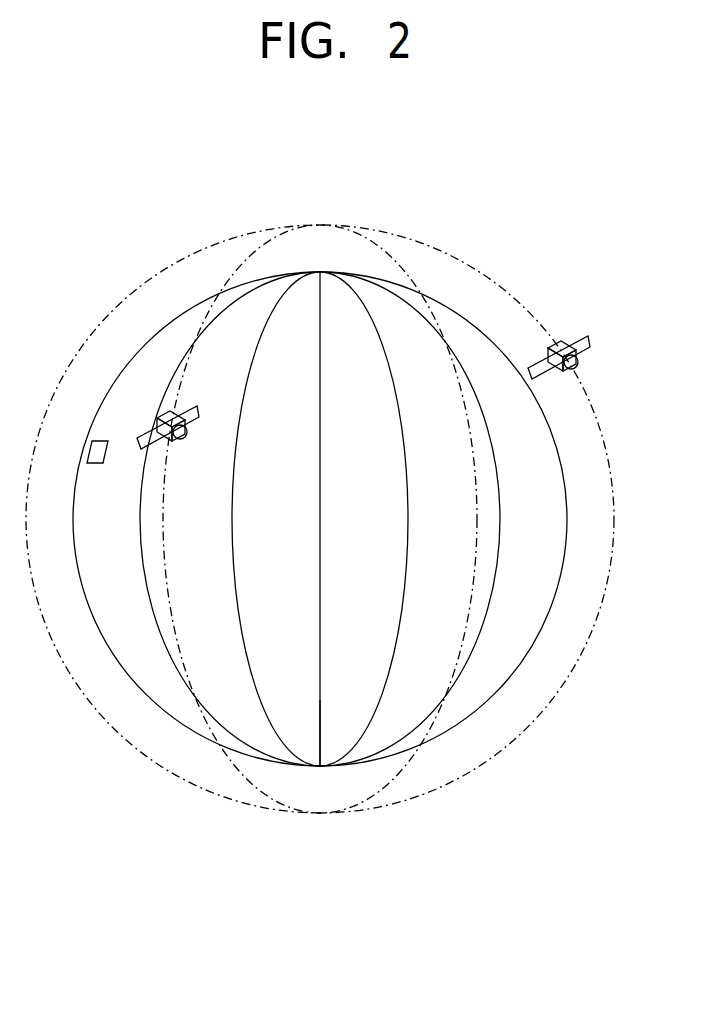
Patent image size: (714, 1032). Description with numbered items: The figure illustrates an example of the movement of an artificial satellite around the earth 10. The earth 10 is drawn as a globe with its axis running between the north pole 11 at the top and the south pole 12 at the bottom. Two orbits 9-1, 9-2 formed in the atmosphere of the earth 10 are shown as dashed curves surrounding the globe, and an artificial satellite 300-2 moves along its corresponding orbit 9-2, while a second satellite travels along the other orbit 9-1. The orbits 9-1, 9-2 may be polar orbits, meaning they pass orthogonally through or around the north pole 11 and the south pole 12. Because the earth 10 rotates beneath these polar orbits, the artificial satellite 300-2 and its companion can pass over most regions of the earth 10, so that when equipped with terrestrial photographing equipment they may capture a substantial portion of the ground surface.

The earth 10 is at (475, 712).
The north pole 11 is at (320, 271).
The south pole 12 is at (320, 769).
The orbit 9-1 is at (458, 262).
The orbit 9-2 is at (233, 270).
The artificial satellite 300-2 is at (167, 413).